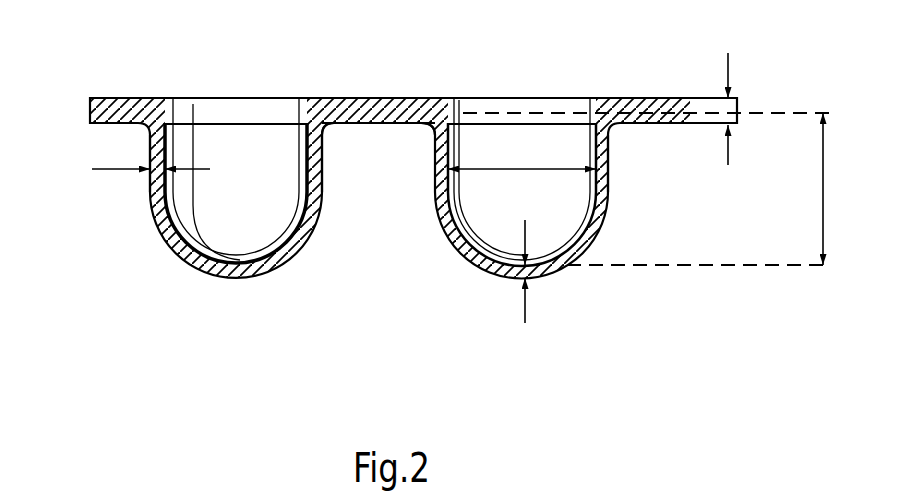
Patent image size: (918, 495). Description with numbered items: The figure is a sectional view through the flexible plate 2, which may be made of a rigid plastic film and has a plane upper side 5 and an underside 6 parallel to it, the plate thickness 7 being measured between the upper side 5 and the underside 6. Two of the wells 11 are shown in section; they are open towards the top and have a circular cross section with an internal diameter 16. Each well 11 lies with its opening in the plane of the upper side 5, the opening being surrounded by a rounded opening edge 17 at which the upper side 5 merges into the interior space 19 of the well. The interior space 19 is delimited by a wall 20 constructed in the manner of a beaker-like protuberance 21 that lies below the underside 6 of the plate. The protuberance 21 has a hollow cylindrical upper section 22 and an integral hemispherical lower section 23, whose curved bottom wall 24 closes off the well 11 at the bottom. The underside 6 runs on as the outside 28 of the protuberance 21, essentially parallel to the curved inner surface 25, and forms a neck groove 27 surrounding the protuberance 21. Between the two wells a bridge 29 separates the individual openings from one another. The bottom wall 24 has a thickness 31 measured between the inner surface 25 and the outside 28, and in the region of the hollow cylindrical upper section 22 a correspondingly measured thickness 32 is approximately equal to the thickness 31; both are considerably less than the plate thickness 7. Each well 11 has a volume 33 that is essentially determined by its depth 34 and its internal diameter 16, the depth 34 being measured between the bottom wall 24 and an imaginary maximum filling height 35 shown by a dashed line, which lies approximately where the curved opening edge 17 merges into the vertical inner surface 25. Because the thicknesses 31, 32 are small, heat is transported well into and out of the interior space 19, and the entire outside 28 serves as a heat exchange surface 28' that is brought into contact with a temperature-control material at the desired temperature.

The flexible plate 2 is at (288, 86).
The upper side 5 is at (558, 95).
The underside 6 is at (358, 126).
The thickness 7 is at (728, 60).
The well 11 is at (183, 177).
The internal diameter 16 is at (520, 169).
The rounded opening edge 17 is at (230, 98).
The interior space 19 is at (217, 218).
The wall 20 is at (319, 234).
The beaker-like protuberance 21 is at (159, 245).
The hollow cylindrical upper section 22 is at (326, 178).
The hemispherical lower section 23 is at (260, 278).
The curved bottom wall 24 is at (557, 273).
The inner surface 25 is at (487, 125).
The neck groove 27 is at (424, 135).
The outside 28 is at (486, 236).
The heat exchange surface 28' is at (522, 248).
The bridge 29 is at (375, 98).
The thickness of the bottom wall 31 is at (527, 304).
The thickness of the upper section 32 is at (107, 170).
The volume 33 is at (247, 160).
The depth 34 is at (823, 204).
The maximum filling height 35 is at (577, 112).